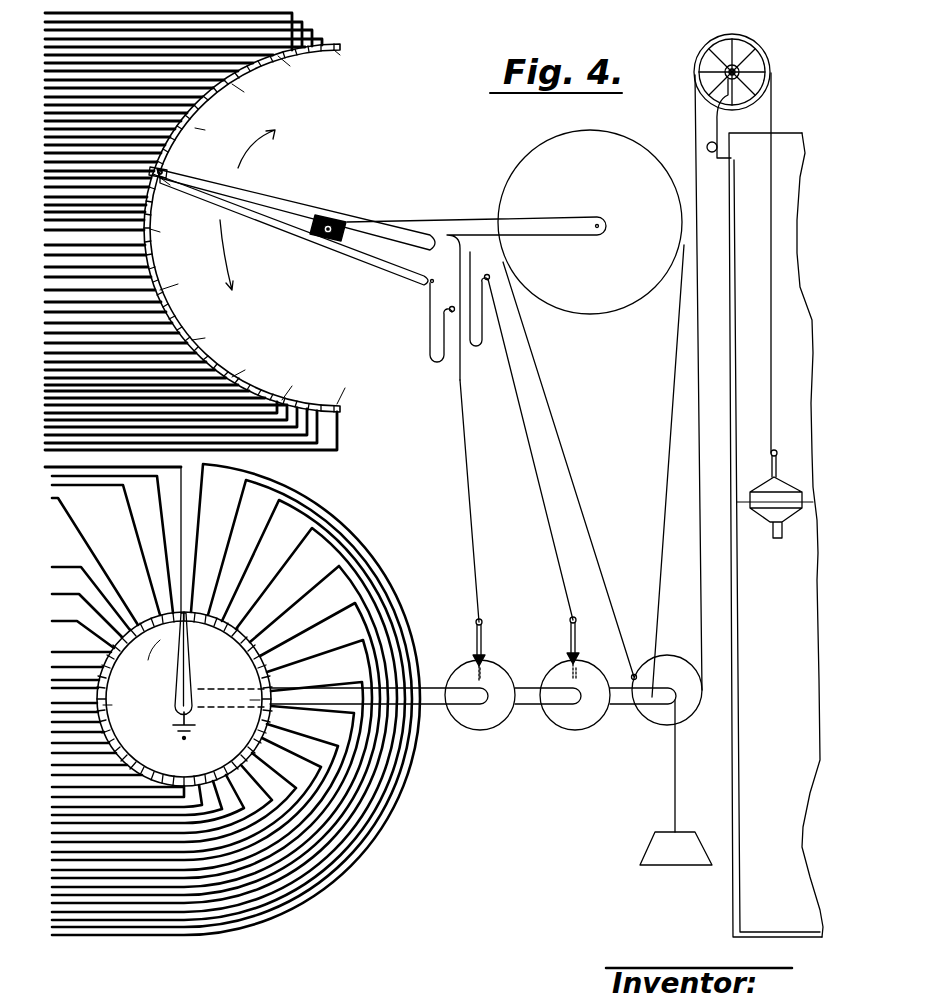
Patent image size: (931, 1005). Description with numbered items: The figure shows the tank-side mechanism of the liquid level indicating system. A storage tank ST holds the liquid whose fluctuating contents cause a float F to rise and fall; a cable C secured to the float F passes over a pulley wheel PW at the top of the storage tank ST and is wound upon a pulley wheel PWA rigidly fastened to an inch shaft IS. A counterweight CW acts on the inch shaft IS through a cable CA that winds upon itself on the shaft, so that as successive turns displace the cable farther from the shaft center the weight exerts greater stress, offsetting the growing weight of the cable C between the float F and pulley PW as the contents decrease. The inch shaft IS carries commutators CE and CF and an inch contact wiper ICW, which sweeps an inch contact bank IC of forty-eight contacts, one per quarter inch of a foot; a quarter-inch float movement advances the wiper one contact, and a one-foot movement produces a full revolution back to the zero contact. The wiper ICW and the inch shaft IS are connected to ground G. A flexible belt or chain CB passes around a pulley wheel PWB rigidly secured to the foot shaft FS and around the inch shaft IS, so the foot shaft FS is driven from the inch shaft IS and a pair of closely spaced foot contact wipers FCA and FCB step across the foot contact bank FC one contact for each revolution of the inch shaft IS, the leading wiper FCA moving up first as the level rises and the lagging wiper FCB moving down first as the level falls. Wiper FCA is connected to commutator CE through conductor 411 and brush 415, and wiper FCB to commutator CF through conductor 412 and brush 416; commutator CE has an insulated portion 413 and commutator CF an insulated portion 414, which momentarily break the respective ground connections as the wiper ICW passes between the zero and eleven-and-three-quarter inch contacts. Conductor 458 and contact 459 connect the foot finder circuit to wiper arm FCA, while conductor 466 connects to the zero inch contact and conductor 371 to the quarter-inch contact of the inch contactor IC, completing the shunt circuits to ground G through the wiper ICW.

The foot contact bank FC is at (209, 240).
The leading foot contact wiper FCA is at (312, 213).
The lagging foot contact wiper FCB is at (330, 243).
The foot shaft FS is at (432, 220).
The pulley wheel PWB is at (590, 222).
The conductor 458 is at (168, 166).
The contact 459 is at (162, 170).
The conductor 412 is at (458, 478).
The conductor 411 is at (533, 498).
The brush 416 is at (483, 630).
The brush 415 is at (578, 625).
The insulated portion 414 is at (486, 665).
The insulated portion 413 is at (580, 665).
The conductor 371 is at (136, 934).
The inch contact bank IC is at (184, 689).
The inch contact wiper ICW is at (203, 664).
The ground G is at (172, 726).
The conductor 466 is at (181, 467).
The inch shaft IS is at (538, 708).
The commutator CF is at (486, 728).
The commutator CE is at (576, 720).
The pulley wheel PWA is at (660, 716).
The flexible belt or chain CB is at (670, 394).
The cable C is at (700, 401).
The cable CA is at (674, 798).
The counterweight CW is at (660, 856).
The pulley wheel PW is at (765, 56).
The storage tank ST is at (730, 908).
The float F is at (792, 516).